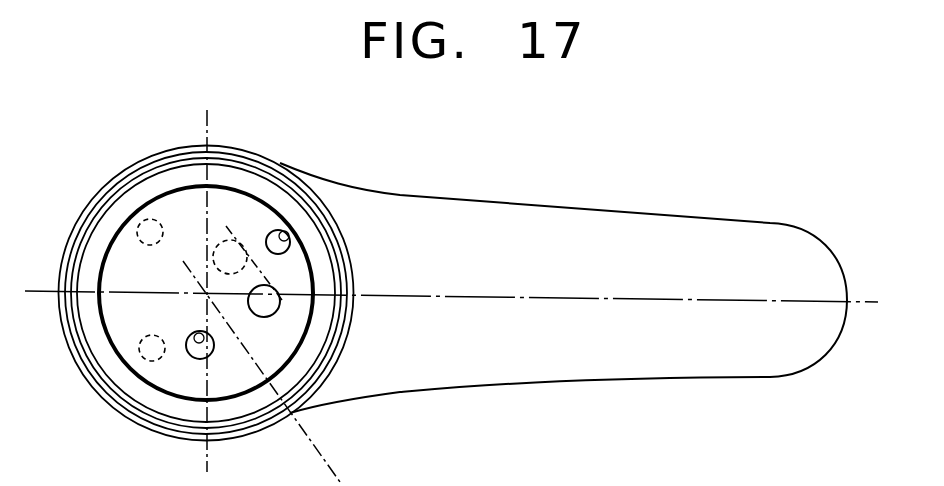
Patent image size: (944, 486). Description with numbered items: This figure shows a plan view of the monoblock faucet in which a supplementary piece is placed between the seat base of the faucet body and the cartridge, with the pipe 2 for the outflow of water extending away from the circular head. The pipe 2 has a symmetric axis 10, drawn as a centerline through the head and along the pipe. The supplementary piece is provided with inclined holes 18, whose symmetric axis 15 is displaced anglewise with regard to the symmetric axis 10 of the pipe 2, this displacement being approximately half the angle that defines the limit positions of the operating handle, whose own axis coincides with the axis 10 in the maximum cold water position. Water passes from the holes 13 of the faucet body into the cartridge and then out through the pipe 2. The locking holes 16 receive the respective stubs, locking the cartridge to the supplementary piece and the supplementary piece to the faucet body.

The pipe 2 is at (700, 228).
The symmetric axis of the pipe 10 is at (627, 300).
The holes 13 is at (231, 230).
The symmetric axis of the holes 15 is at (325, 458).
The locking holes 16 is at (137, 208).
The inclined holes 18 is at (197, 332).